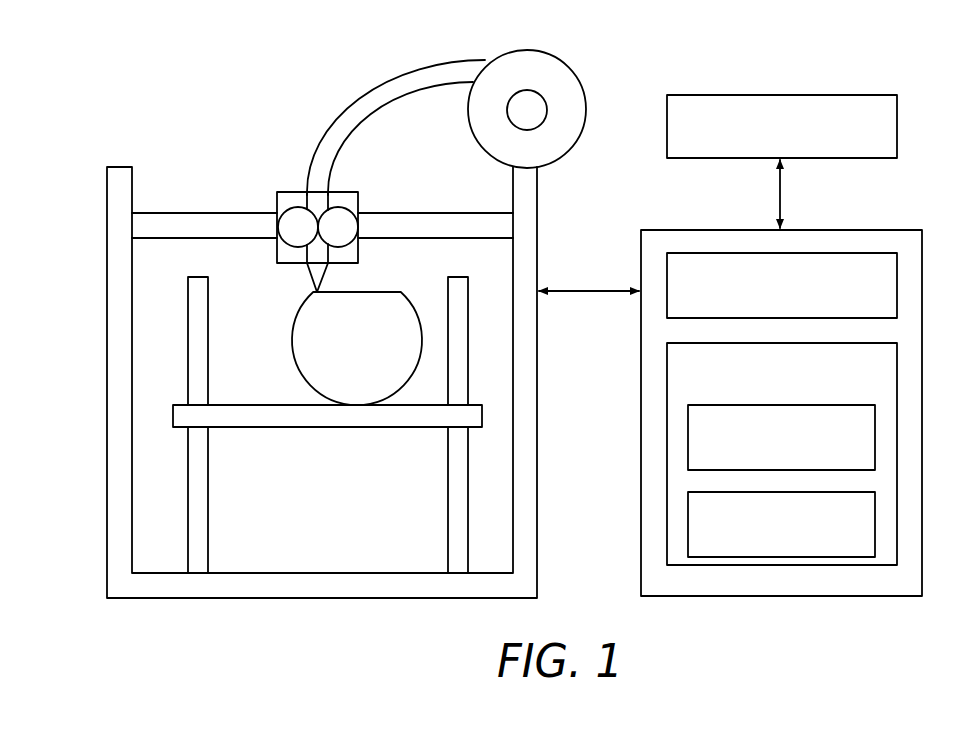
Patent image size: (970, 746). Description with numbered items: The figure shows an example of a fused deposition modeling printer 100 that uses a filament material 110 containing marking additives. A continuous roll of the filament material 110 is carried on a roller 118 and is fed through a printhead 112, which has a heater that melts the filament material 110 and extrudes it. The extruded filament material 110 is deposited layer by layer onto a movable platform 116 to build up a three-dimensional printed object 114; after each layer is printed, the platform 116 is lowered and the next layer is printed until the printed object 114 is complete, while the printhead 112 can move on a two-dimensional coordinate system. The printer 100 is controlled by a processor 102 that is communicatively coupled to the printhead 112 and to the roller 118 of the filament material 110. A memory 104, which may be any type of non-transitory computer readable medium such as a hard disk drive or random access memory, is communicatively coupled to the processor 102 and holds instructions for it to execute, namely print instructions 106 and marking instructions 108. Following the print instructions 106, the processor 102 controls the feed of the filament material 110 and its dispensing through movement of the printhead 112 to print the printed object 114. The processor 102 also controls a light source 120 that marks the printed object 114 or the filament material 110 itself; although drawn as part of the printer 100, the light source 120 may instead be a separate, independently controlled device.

The fused deposition modeling printer 100 is at (232, 100).
The processor 102 is at (897, 286).
The memory 104 is at (897, 367).
The print instructions 106 is at (875, 435).
The marking instructions 108 is at (875, 522).
The filament material 110 is at (368, 95).
The printhead 112 is at (358, 192).
The 3D printed object 114 is at (408, 301).
The movable platform 116 is at (357, 427).
The roller 118 is at (573, 74).
The light source 120 is at (897, 130).